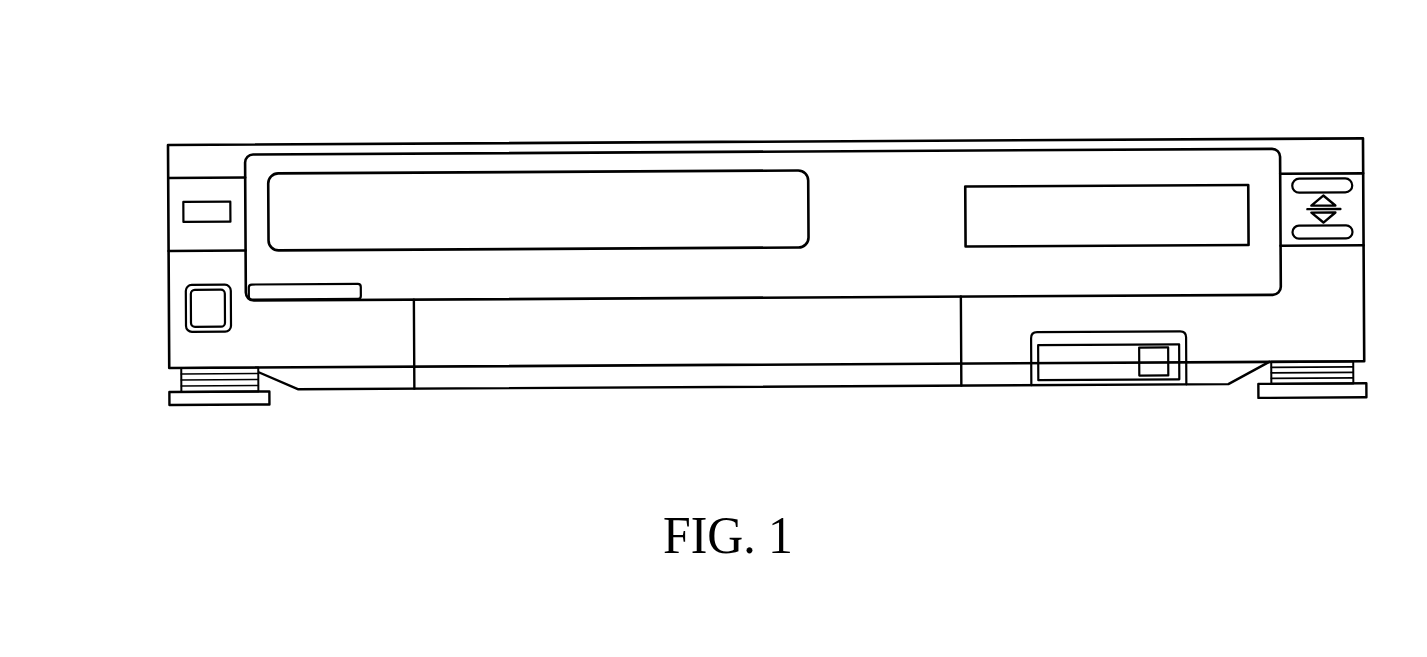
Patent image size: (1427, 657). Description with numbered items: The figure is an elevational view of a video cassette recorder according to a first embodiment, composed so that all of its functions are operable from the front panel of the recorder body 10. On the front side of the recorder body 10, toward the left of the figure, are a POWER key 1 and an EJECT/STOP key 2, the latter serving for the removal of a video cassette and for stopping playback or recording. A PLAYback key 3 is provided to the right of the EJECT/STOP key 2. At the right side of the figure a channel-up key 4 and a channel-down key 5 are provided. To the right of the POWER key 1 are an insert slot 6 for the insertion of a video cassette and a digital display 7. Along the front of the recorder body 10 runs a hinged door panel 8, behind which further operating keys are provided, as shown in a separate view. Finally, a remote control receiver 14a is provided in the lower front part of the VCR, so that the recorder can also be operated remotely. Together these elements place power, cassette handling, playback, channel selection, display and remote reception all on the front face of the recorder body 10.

The recorder body 10 is at (436, 116).
The POWER key 1 is at (207, 212).
The EJECT/STOP key 2 is at (204, 315).
The PLAYback key 3 is at (328, 298).
The channel-up key 4 is at (1312, 187).
The channel-down key 5 is at (1337, 238).
The insert slot 6 is at (633, 202).
The digital display 7 is at (1105, 210).
The hinged door panel 8 is at (602, 342).
The remote control receiver 14a is at (1150, 368).